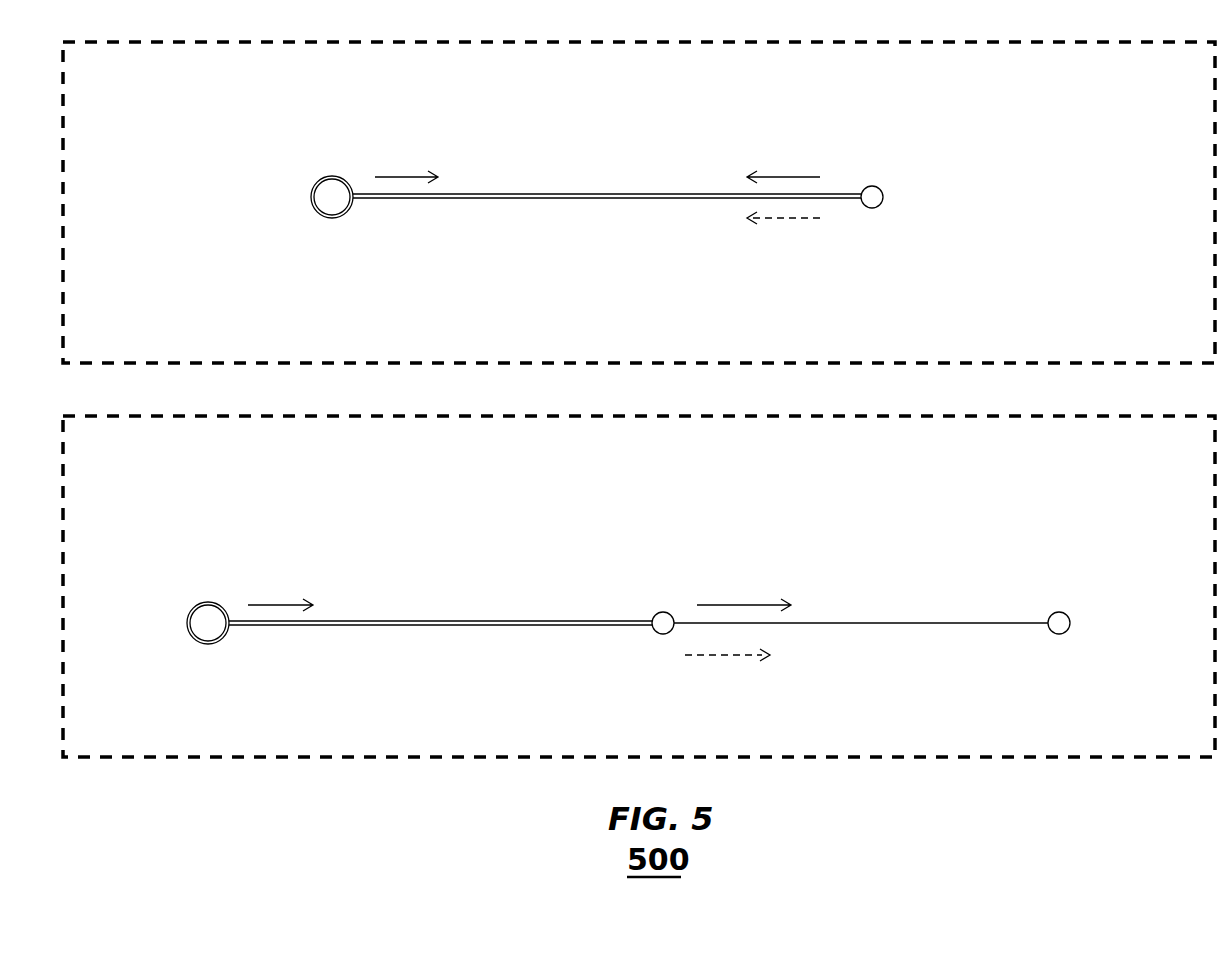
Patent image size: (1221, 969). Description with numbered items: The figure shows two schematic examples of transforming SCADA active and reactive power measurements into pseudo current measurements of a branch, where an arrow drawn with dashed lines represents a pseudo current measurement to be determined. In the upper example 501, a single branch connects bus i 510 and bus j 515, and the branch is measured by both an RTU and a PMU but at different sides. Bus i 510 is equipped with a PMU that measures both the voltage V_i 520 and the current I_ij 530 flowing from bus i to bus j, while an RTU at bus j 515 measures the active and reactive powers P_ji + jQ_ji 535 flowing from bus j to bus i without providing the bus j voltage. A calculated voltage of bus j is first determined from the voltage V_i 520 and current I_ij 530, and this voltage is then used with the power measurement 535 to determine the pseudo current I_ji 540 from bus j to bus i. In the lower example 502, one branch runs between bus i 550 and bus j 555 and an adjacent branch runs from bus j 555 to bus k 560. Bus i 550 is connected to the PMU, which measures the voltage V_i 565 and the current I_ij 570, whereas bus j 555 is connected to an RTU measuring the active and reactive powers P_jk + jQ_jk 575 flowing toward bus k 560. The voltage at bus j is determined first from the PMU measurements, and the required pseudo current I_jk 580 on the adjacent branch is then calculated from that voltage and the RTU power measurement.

The example 501 is at (1153, 362).
The example 502 is at (1212, 436).
The bus i 510 is at (338, 218).
The bus j 515 is at (882, 208).
The voltage at bus i 520 is at (332, 134).
The current flowing from bus i to bus j 530 is at (420, 157).
The active and reactive powers flowing from bus j to bus i 535 is at (798, 140).
The pseudo measurements of currents from bus j to bus i 540 is at (785, 258).
The bus i 550 is at (215, 644).
The bus j 555 is at (665, 612).
The bus k 560 is at (1076, 620).
The voltage of bus i 565 is at (206, 562).
The current flowing from bus i to bus j 570 is at (295, 580).
The active and reactive powers flowing from bus j to bus k 575 is at (754, 560).
The pseudo current 580 is at (748, 683).